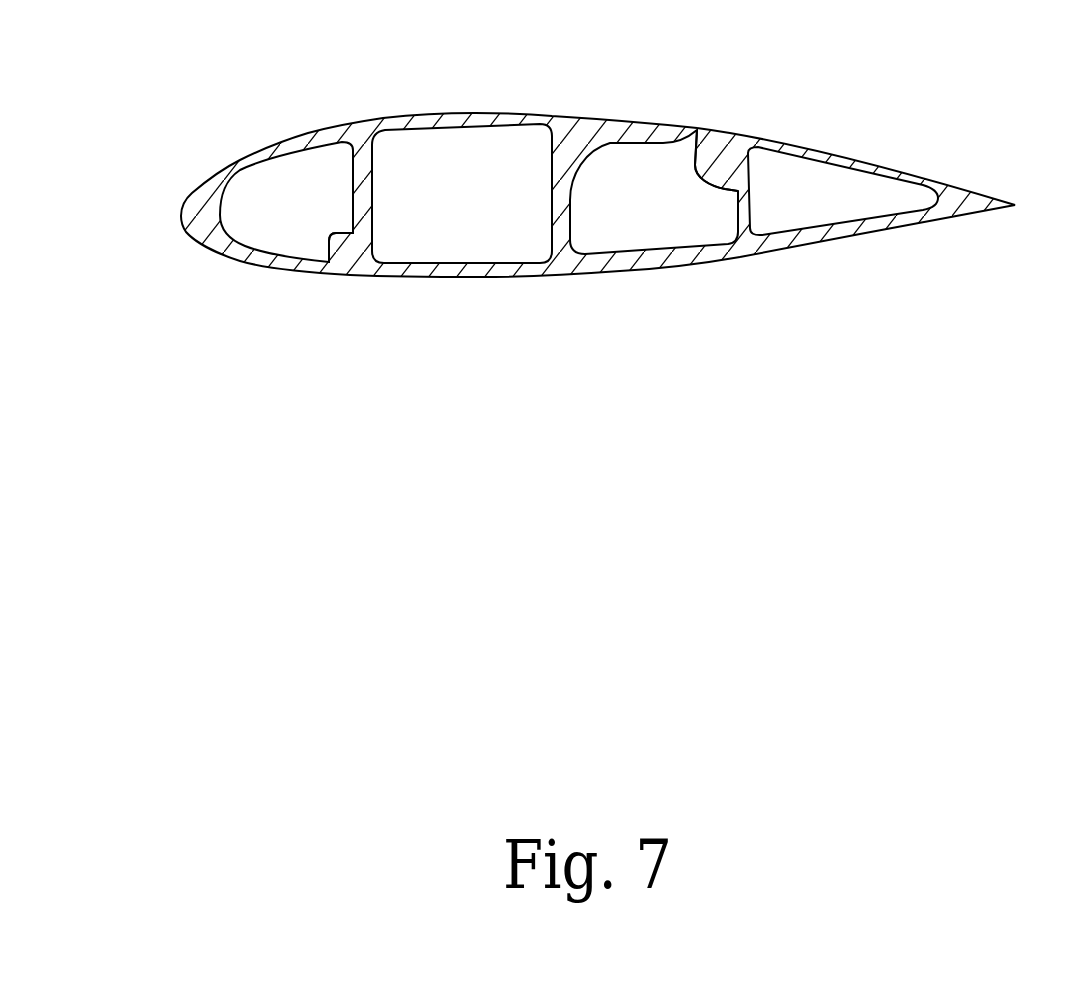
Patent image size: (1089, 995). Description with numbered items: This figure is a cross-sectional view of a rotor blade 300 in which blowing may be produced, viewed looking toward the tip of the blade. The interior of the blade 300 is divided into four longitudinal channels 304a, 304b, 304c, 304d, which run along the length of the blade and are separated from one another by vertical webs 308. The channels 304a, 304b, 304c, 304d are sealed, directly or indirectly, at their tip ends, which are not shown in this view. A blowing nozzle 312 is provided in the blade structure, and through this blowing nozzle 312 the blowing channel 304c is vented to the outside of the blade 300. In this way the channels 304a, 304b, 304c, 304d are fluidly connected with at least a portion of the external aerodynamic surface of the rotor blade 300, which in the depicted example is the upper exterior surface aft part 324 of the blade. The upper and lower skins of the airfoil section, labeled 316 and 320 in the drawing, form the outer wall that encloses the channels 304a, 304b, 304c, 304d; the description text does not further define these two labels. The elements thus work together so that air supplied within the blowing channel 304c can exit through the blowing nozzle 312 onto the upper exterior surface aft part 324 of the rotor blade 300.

The rotor blade 300 is at (340, 468).
The longitudinal channel 304a is at (328, 218).
The longitudinal channel 304b is at (500, 218).
The blowing channel 304c is at (687, 217).
The longitudinal channel 304d is at (865, 215).
The vertical web 308 is at (329, 245).
The blowing nozzle 312 is at (700, 129).
The upper skin 316 is at (383, 118).
The lower skin 320 is at (489, 277).
The upper exterior surface aft part 324 is at (884, 166).